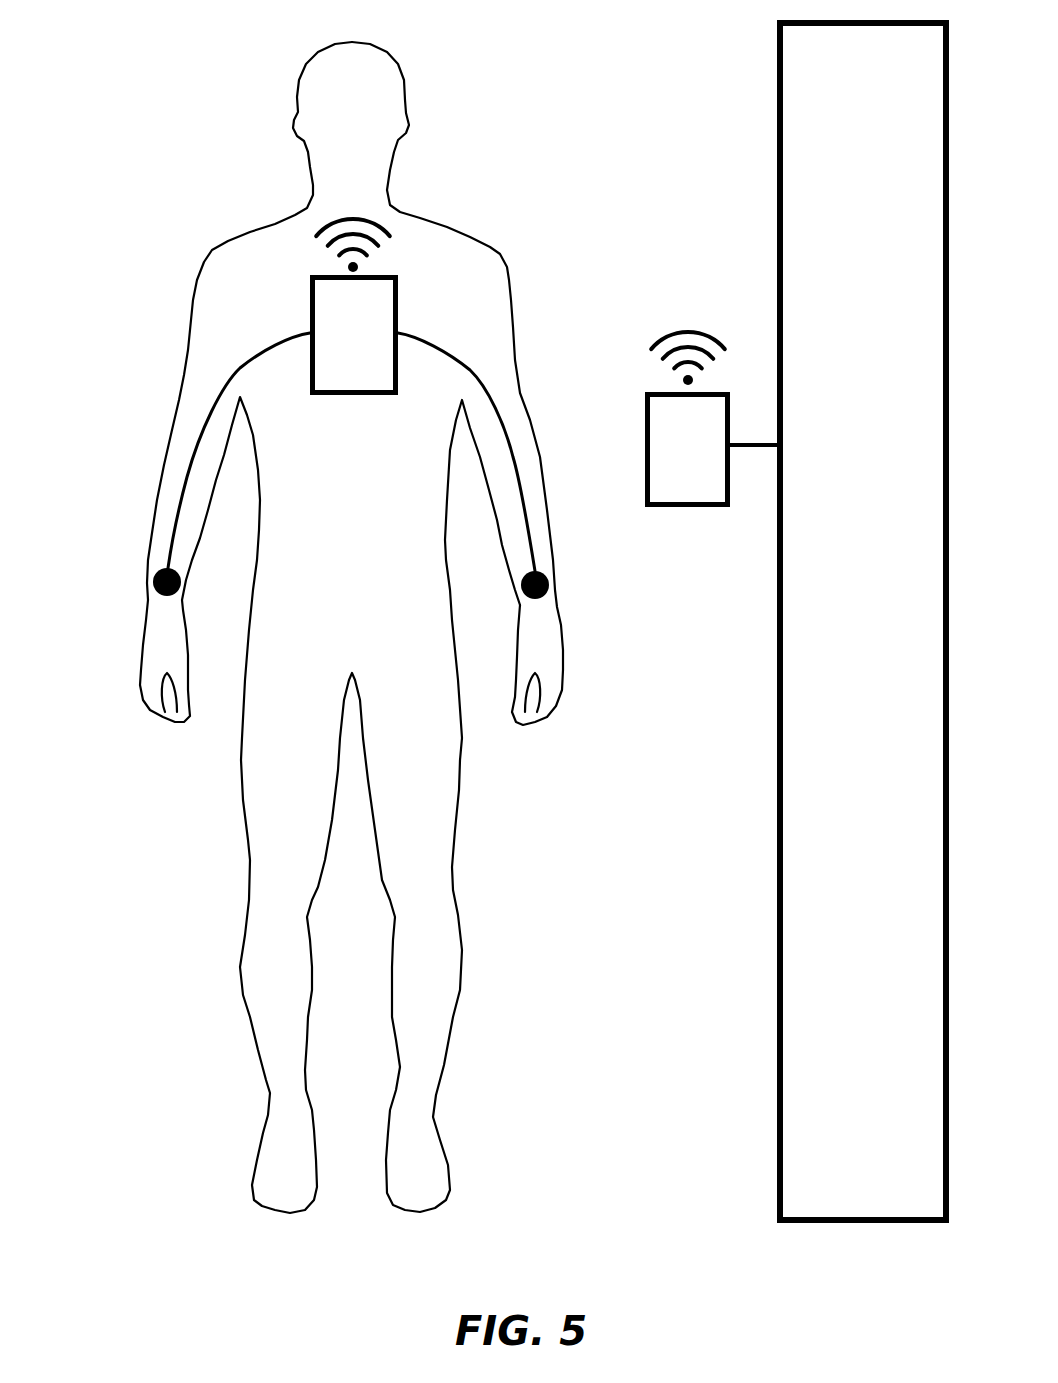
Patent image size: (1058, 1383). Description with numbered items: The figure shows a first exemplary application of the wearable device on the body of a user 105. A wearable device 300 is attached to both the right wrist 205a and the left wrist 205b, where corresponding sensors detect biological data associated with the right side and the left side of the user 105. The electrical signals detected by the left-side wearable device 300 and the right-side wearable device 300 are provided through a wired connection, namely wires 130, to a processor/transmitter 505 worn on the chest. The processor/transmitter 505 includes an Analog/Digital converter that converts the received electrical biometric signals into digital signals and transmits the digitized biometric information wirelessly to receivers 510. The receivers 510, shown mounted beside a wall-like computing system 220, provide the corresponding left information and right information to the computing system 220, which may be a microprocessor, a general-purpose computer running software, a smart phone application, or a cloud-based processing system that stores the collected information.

The user 105 is at (402, 195).
The wires 130 is at (262, 340).
The processor/transmitter 505 is at (360, 400).
The wearable device 300 is at (158, 608).
The right wrist 205a is at (183, 600).
The left wrist 205b is at (515, 605).
The receivers 510 is at (692, 518).
The computing system 220 is at (802, 1113).